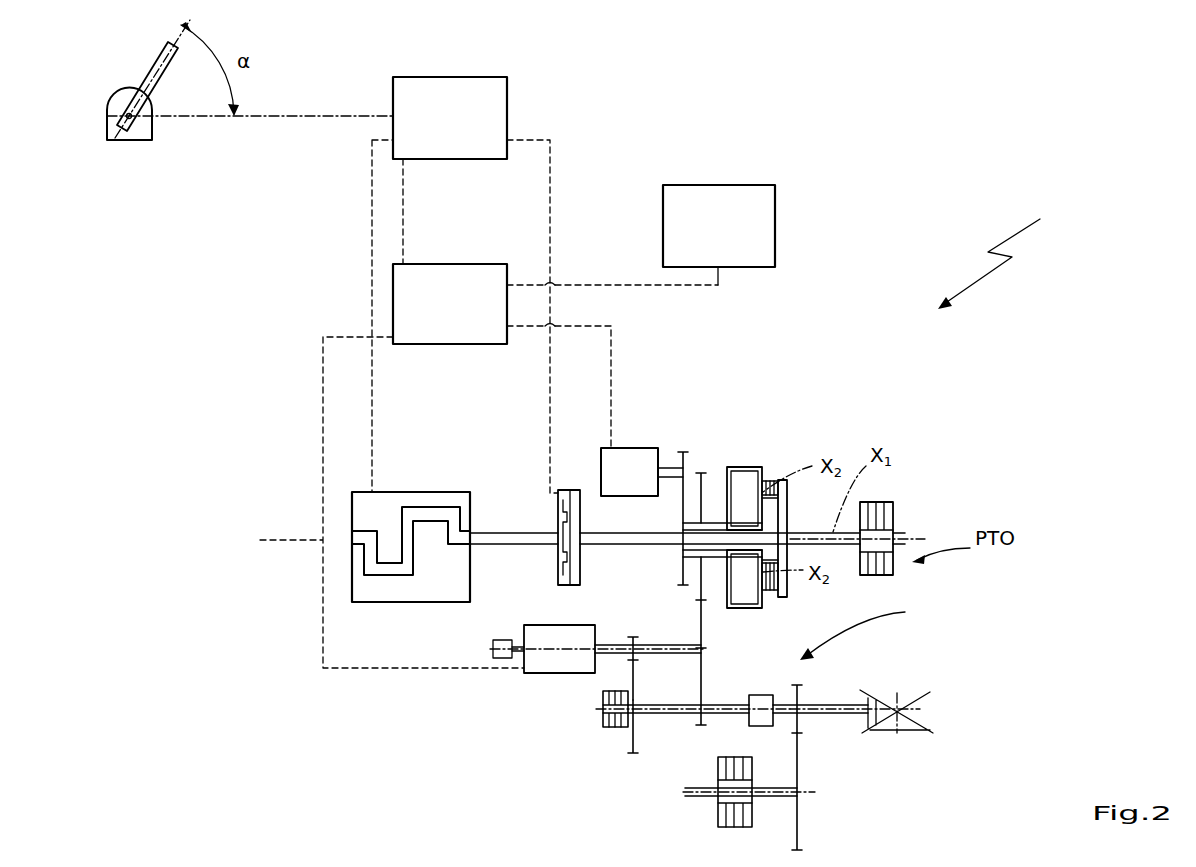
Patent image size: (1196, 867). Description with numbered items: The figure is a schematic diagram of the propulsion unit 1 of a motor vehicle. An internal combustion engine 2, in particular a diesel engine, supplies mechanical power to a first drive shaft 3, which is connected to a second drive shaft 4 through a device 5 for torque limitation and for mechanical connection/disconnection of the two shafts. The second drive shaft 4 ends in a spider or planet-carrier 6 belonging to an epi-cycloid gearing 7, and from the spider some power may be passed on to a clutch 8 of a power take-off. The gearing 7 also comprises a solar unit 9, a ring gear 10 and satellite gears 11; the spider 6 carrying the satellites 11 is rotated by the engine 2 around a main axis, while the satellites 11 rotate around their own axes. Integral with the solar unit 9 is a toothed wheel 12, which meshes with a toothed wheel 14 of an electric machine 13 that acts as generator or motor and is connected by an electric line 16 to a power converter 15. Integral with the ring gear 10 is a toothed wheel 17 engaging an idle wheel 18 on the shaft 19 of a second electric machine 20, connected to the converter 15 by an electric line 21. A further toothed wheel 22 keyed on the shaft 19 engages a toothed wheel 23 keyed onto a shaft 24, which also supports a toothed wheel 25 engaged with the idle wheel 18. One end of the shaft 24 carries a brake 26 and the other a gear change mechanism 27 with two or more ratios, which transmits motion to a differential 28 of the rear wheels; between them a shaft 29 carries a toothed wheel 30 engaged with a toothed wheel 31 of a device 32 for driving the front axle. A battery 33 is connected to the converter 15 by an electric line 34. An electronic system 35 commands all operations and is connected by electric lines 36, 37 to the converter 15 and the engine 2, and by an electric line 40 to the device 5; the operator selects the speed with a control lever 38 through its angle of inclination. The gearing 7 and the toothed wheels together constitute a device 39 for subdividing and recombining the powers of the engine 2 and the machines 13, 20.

The propulsion unit 1 is at (995, 254).
The internal combustion engine 2 is at (355, 592).
The first drive shaft 3 is at (506, 546).
The second drive shaft 4 is at (622, 545).
The device for torque limitation and mechanical connection/disconnection 5 is at (558, 500).
The spider or planet-carrier 6 is at (787, 518).
The epi-cycloid gearing 7 is at (764, 460).
The clutch of a PTO 8 is at (890, 535).
The solar gear or unit 9 is at (710, 523).
The ring gear 10 is at (748, 608).
The satellite gears 11 is at (767, 490).
The toothed wheel 12 is at (683, 568).
The electric machine 13 is at (630, 455).
The toothed wheel 14 is at (686, 460).
The power converter 15 is at (441, 345).
The electric line 16 is at (612, 370).
The toothed wheel 17 is at (703, 592).
The idle wheel 18 is at (702, 665).
The shaft 19 is at (668, 655).
The electric machine 20 is at (548, 673).
The electric line 21 is at (378, 502).
The toothed wheel 22 is at (628, 640).
The toothed wheel 23 is at (632, 735).
The shaft 24 is at (667, 714).
The toothed wheel 25 is at (704, 720).
The brake 26 is at (608, 725).
The gear change mechanism or transmission 27 is at (762, 698).
The differential 28 is at (870, 728).
The shaft 29 is at (838, 716).
The toothed wheel 30 is at (799, 690).
The toothed wheel 31 is at (799, 825).
The device for transmitting drive to the front axle 32 is at (762, 827).
The device for accumulation of electrical energy 33 is at (713, 190).
The electric line 34 is at (573, 283).
The electronic system or microprocessor 35 is at (500, 119).
The electric line 36 is at (405, 226).
The electric line 37 is at (371, 228).
The control lever 38 is at (150, 73).
The device for subdivision/re-combination of powers 39 is at (866, 627).
The electric line 40 is at (550, 420).